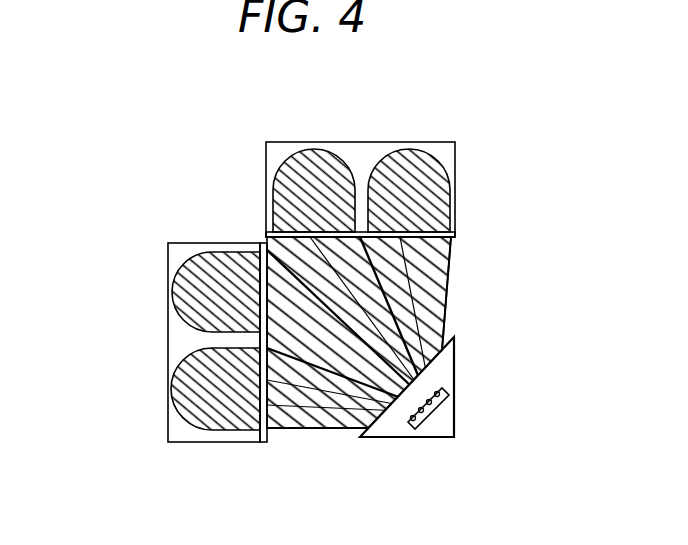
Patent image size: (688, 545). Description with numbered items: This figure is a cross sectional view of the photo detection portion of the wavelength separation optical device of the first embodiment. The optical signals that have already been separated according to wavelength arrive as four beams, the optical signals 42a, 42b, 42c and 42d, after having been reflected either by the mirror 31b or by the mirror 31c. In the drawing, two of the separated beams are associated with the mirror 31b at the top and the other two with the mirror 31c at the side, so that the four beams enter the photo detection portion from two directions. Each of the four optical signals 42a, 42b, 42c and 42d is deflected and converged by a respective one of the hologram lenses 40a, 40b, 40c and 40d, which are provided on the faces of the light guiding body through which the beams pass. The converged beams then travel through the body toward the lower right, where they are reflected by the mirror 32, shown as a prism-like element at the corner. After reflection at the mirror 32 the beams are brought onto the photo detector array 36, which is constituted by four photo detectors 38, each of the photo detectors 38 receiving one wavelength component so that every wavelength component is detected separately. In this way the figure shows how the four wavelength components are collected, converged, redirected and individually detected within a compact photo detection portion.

The mirror 31b is at (353, 141).
The mirror 31c is at (168, 283).
The mirror 32 is at (453, 428).
The photo detector array 36 is at (413, 436).
The photo detectors 38 is at (450, 392).
The hologram lens 40a is at (266, 236).
The hologram lens 40b is at (449, 253).
The hologram lens 40c is at (270, 432).
The hologram lens 40d is at (262, 250).
The optical signal 42a is at (313, 150).
The optical signal 42b is at (425, 152).
The optical signal 42c is at (186, 398).
The optical signal 42d is at (182, 304).